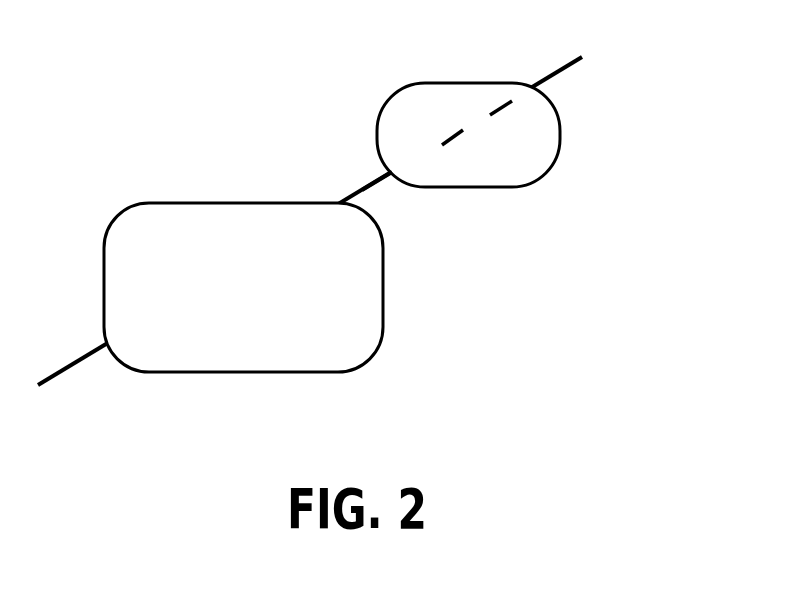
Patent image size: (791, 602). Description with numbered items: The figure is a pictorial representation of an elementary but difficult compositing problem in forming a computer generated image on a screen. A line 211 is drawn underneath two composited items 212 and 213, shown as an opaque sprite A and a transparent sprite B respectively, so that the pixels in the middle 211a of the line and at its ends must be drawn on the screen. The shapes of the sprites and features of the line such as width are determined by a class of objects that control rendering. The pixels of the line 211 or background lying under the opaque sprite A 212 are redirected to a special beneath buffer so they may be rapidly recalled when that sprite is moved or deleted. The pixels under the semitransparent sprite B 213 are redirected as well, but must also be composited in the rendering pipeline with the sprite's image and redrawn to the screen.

The line 211 is at (558, 68).
The middle pixels of the line 211a is at (357, 185).
The opaque sprite A 212 is at (382, 300).
The transparent sprite B 213 is at (560, 137).